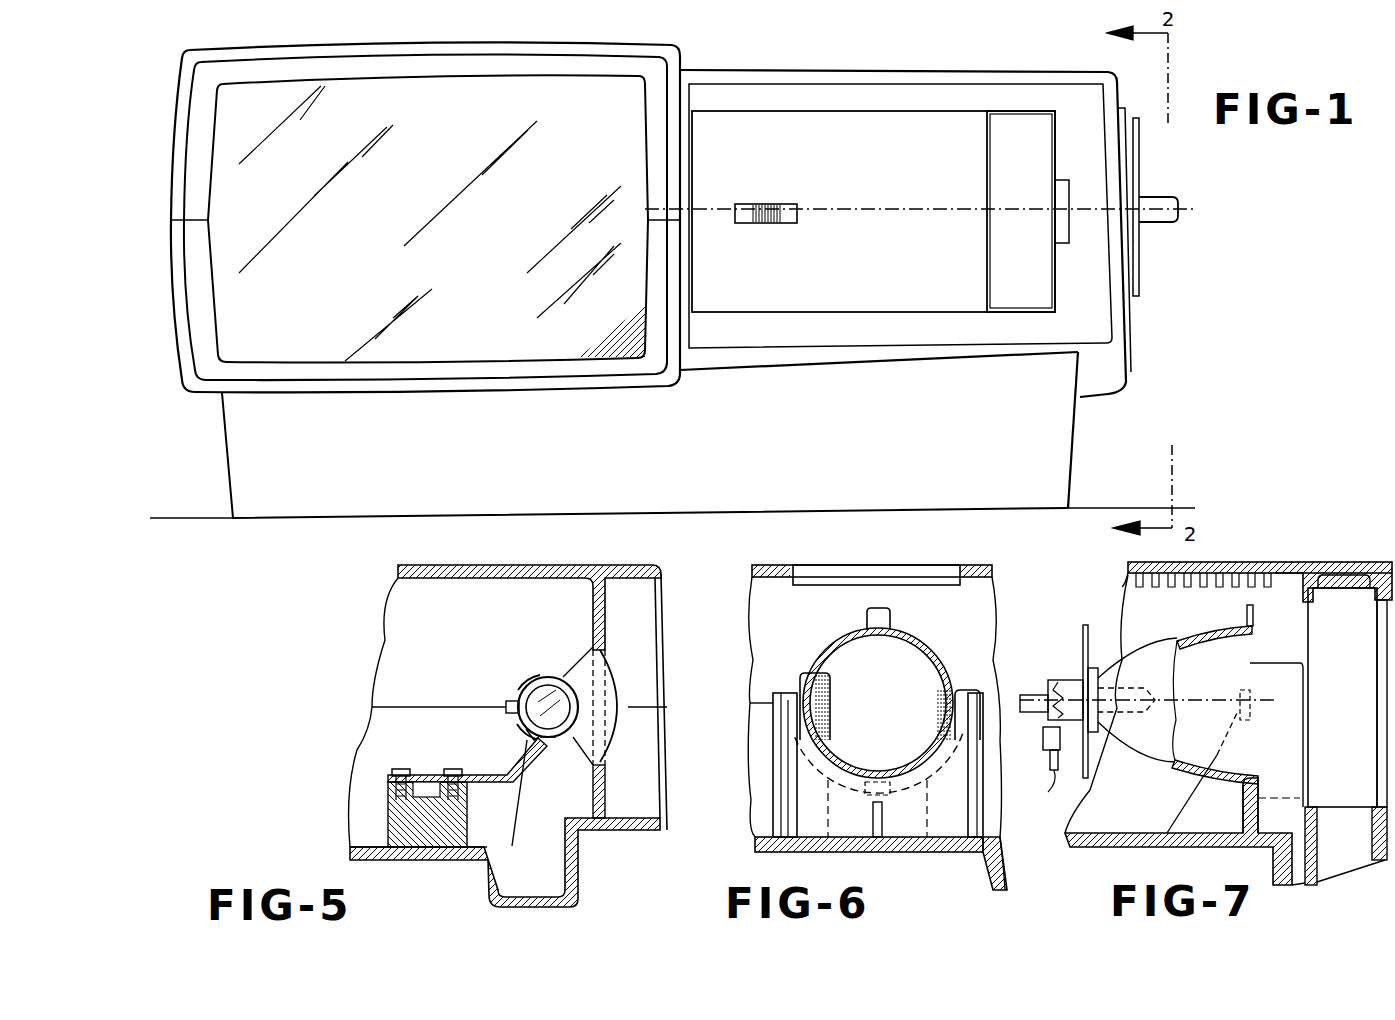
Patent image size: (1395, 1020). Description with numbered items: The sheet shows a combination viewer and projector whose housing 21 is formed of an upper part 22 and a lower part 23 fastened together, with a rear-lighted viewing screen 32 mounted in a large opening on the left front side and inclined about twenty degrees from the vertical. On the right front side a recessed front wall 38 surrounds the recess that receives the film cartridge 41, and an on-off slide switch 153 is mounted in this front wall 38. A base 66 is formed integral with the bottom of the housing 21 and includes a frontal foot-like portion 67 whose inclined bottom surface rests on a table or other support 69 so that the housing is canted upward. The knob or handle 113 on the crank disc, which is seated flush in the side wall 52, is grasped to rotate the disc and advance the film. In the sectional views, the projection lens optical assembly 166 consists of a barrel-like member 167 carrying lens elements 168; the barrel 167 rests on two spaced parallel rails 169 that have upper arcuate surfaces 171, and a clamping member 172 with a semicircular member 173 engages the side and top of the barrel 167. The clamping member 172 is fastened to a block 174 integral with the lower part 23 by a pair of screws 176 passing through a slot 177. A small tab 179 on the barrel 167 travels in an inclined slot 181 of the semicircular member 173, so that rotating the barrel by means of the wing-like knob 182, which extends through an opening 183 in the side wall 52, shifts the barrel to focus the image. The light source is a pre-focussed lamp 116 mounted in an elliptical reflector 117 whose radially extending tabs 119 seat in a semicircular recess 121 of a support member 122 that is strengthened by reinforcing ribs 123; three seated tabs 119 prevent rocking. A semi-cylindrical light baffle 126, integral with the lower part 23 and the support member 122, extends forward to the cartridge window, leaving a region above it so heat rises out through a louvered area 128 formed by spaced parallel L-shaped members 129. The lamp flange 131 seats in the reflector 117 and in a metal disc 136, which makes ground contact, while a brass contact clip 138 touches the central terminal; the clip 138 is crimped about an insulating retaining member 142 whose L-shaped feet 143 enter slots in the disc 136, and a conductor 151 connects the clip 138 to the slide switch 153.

In FIG. 1, the housing 21 is at (806, 56).
In FIG. 1, the upper part 22 is at (170, 129).
In FIG. 5, the upper part 22 is at (406, 598).
In FIG. 6, the upper part 22 is at (750, 652).
In FIG. 7, the upper part 22 is at (1314, 564).
In FIG. 1, the lower part 23 is at (170, 280).
In FIG. 5, the lower part 23 is at (360, 735).
In FIG. 6, the lower part 23 is at (746, 775).
In FIG. 7, the lower part 23 is at (1104, 852).
In FIG. 1, the viewing screen 32 is at (428, 218).
In FIG. 1, the front wall 38 is at (873, 211).
In FIG. 1, the film cartridge 41 is at (993, 110).
In FIG. 7, the film cartridge 41 is at (1330, 811).
In FIG. 1, the base 66 is at (1076, 476).
In FIG. 1, the frontal foot-like portion 67 is at (1068, 436).
In FIG. 1, the support 69 is at (171, 518).
In FIG. 1, the knob 113 is at (1178, 214).
In FIG. 1, the on-off slide switch 153 is at (754, 225).
In FIG. 5, the side wall 52 is at (608, 601).
In FIG. 5, the projection lens optical assembly 166 is at (561, 660).
In FIG. 5, the barrel-like member 167 is at (551, 676).
In FIG. 5, the lens elements 168 is at (548, 740).
In FIG. 5, the rails 169 is at (525, 816).
In FIG. 5, the upper arcuate surfaces 171 is at (527, 733).
In FIG. 5, the clamping member 172 is at (500, 757).
In FIG. 5, the semicircular member 173 is at (522, 682).
In FIG. 5, the block 174 is at (428, 829).
In FIG. 5, the screws 176 is at (395, 769).
In FIG. 5, the slot 177 is at (388, 823).
In FIG. 5, the tab 179 is at (506, 705).
In FIG. 5, the slot 181 is at (513, 721).
In FIG. 5, the wing-like knob 182 is at (615, 679).
In FIG. 5, the opening 183 is at (607, 646).
In FIG. 7, the lamp 116 is at (1158, 698).
In FIG. 6, the elliptical reflector 117 is at (922, 651).
In FIG. 7, the elliptical reflector 117 is at (1212, 634).
In FIG. 6, the tabs 119 is at (890, 616).
In FIG. 7, the tabs 119 is at (1254, 617).
In FIG. 6, the semicircular recess 121 is at (935, 771).
In FIG. 7, the semicircular recess 121 is at (1243, 801).
In FIG. 6, the support member 122 is at (810, 823).
In FIG. 7, the support member 122 is at (1260, 826).
In FIG. 6, the reinforcing ribs 123 is at (775, 813).
In FIG. 6, the light baffle 126 is at (832, 717).
In FIG. 7, the light baffle 126 is at (1308, 691).
In FIG. 7, the louvered area 128 is at (1232, 595).
In FIG. 6, the L-shaped members 129 is at (906, 580).
In FIG. 7, the L-shaped members 129 is at (1122, 586).
In FIG. 7, the flange 131 is at (1101, 668).
In FIG. 7, the disc 136 is at (1083, 637).
In FIG. 7, the contact clip 138 is at (1045, 696).
In FIG. 7, the retaining member 142 is at (1061, 680).
In FIG. 7, the L-shaped feet 143 is at (1098, 684).
In FIG. 7, the conductor 151 is at (1050, 776).